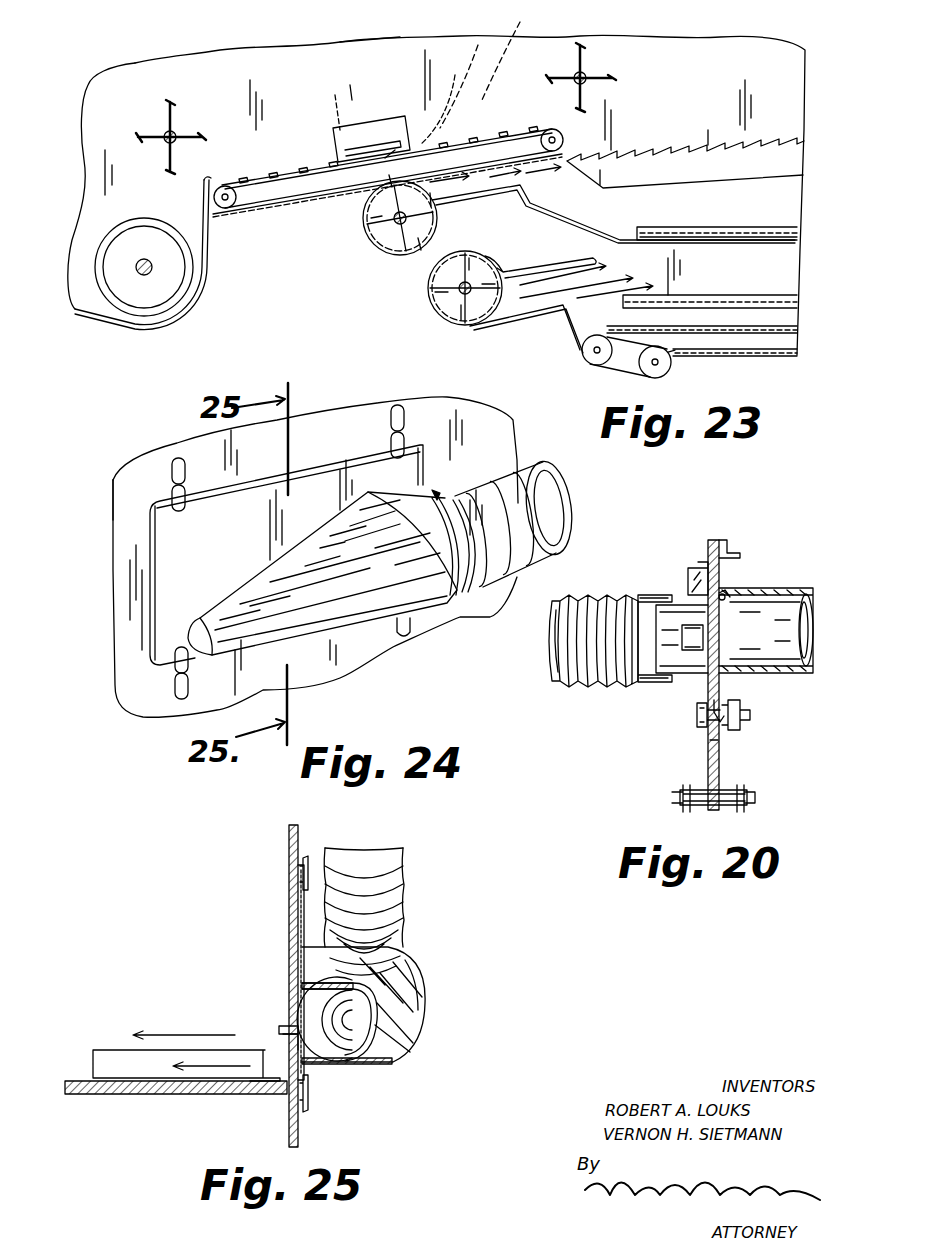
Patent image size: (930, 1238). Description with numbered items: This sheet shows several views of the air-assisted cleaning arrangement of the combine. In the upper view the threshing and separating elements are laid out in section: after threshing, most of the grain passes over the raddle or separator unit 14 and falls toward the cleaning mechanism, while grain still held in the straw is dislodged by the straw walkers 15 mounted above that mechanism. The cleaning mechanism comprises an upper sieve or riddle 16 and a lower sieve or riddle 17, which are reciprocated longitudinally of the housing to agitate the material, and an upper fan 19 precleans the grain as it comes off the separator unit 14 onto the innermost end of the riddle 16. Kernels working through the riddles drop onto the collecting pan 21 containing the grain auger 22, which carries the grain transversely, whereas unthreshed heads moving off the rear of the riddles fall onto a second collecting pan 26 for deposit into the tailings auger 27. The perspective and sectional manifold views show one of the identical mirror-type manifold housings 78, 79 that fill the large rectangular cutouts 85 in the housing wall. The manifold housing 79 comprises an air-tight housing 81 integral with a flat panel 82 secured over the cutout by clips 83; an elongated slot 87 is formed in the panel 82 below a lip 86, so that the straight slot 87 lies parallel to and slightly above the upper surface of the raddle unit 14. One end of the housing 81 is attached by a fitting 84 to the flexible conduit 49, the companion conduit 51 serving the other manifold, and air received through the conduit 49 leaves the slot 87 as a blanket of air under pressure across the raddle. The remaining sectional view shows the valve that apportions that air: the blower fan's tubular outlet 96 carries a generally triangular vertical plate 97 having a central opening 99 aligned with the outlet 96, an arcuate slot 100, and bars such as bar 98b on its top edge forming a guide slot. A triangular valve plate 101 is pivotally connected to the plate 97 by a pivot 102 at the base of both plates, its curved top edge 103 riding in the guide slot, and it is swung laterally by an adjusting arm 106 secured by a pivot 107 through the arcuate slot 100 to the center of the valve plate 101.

In FIG. 23, the raddle unit 14 is at (304, 153).
In FIG. 23, the straw walkers 15 is at (789, 128).
In FIG. 23, the upper sieve 16 is at (784, 219).
In FIG. 25, the upper sieve 16 is at (210, 1114).
In FIG. 23, the lower sieve 17 is at (787, 291).
In FIG. 23, the upper fan 19 is at (371, 270).
In FIG. 23, the collecting pan 21 is at (785, 358).
In FIG. 23, the grain auger 22 is at (670, 372).
In FIG. 23, the second collecting pan 26 is at (797, 338).
In FIG. 23, the tailings auger 27 is at (590, 366).
In FIG. 24, the flexible conduit 49 is at (572, 498).
In FIG. 20, the flexible conduit 49 is at (593, 641).
In FIG. 25, the flexible conduit 49 is at (400, 900).
In FIG. 23, the flexible conduit 51 is at (520, 24).
In FIG. 23, the manifold housing 78 is at (354, 82).
In FIG. 24, the manifold housing 79 is at (399, 657).
In FIG. 25, the manifold housing 79 is at (447, 1044).
In FIG. 24, the air-tight housing 81 is at (345, 618).
In FIG. 25, the air-tight housing 81 is at (420, 1010).
In FIG. 23, the flat panel 82 is at (334, 96).
In FIG. 24, the flat panel 82 is at (170, 558).
In FIG. 25, the flat panel 82 is at (299, 925).
In FIG. 24, the clips 83 is at (178, 458).
In FIG. 25, the clips 83 is at (305, 858).
In FIG. 23, the fitting 84 is at (455, 78).
In FIG. 24, the fitting 84 is at (452, 600).
In FIG. 23, the rectangular cutout 85 is at (348, 128).
In FIG. 25, the rectangular cutout 85 is at (300, 955).
In FIG. 23, the lip 86 is at (375, 148).
In FIG. 25, the lip 86 is at (285, 1026).
In FIG. 23, the elongated slot 87 is at (385, 158).
In FIG. 25, the elongated slot 87 is at (300, 1050).
In FIG. 20, the tubular outlet 96 is at (773, 590).
In FIG. 20, the vertical plate 97 is at (722, 763).
In FIG. 20, the bar 98b is at (694, 565).
In FIG. 20, the opening 99 is at (727, 592).
In FIG. 20, the arcuate slot 100 is at (722, 715).
In FIG. 20, the valve plate 101 is at (708, 755).
In FIG. 20, the pivot 102 is at (700, 788).
In FIG. 20, the curved top edge 103 is at (715, 540).
In FIG. 20, the adjusting arm 106 is at (735, 728).
In FIG. 20, the pivot 107 is at (750, 715).